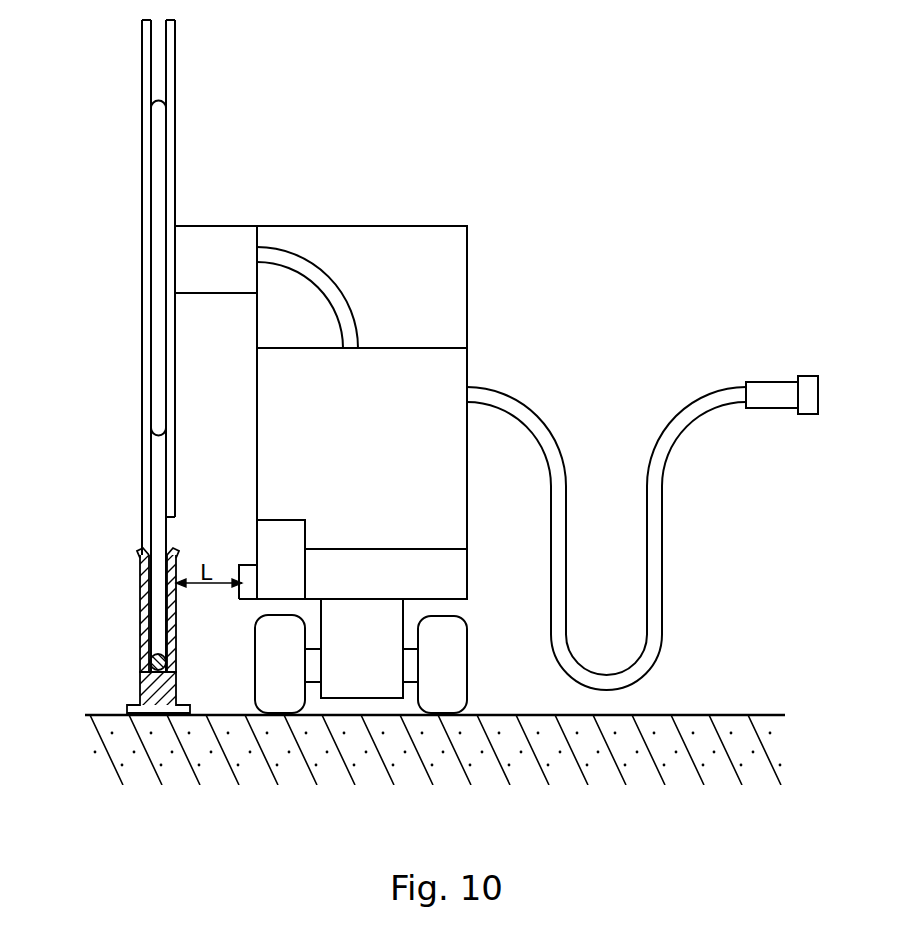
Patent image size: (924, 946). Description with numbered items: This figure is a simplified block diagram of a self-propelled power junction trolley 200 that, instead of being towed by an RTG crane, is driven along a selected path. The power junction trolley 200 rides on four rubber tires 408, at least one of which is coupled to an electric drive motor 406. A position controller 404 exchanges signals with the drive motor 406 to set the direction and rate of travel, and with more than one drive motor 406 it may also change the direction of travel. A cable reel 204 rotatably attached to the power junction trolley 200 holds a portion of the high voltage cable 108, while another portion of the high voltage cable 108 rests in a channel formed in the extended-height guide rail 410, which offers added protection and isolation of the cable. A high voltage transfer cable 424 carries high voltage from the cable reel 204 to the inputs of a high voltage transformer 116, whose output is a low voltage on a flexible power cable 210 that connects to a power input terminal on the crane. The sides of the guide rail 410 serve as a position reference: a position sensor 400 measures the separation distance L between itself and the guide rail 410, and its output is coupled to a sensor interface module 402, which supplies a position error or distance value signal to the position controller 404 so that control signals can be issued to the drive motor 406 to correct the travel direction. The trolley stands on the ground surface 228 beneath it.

The power junction trolley 200 is at (645, 123).
The cable reel 204 is at (177, 68).
The high voltage transformer 116 is at (467, 365).
The high voltage transfer cable 424 is at (335, 285).
The flexible power cable 210 is at (528, 402).
The position sensor 400 is at (242, 565).
The sensor interface module 402 is at (290, 520).
The position controller 404 is at (370, 549).
The electric drive motor 406 is at (407, 613).
The rubber tires 408 is at (468, 662).
The high voltage cable 108 is at (147, 543).
The guide rail 410 is at (140, 688).
The ground 228 is at (770, 760).